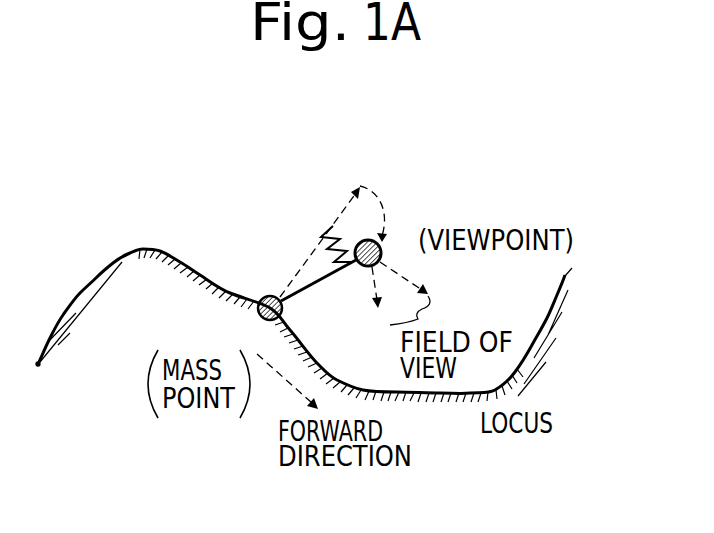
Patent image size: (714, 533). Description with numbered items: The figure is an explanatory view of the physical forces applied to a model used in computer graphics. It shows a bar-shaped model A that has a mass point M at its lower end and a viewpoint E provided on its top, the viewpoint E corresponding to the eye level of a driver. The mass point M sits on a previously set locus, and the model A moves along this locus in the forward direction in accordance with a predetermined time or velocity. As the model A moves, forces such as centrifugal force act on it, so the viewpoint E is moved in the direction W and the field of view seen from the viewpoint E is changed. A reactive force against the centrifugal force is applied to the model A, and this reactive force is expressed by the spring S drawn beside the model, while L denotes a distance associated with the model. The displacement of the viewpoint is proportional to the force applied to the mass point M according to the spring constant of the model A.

The mass point M is at (260, 316).
The viewpoint E is at (382, 253).
The bar-shaped model A is at (306, 290).
The distance L is at (324, 235).
The spring S is at (340, 238).
The direction W is at (335, 228).